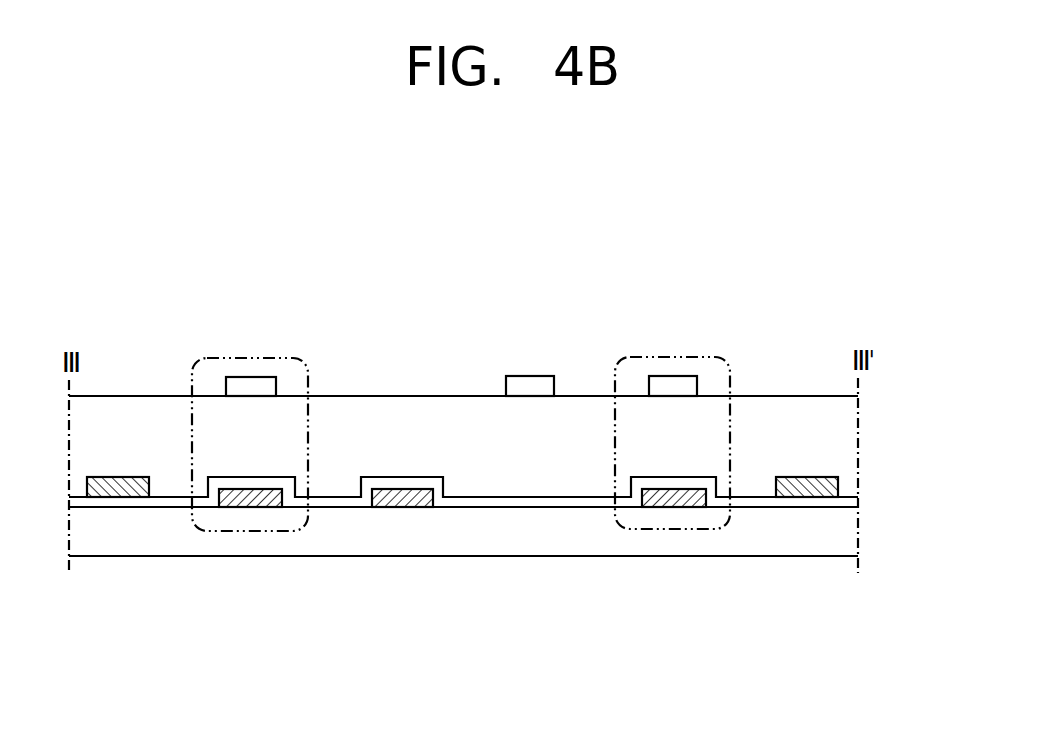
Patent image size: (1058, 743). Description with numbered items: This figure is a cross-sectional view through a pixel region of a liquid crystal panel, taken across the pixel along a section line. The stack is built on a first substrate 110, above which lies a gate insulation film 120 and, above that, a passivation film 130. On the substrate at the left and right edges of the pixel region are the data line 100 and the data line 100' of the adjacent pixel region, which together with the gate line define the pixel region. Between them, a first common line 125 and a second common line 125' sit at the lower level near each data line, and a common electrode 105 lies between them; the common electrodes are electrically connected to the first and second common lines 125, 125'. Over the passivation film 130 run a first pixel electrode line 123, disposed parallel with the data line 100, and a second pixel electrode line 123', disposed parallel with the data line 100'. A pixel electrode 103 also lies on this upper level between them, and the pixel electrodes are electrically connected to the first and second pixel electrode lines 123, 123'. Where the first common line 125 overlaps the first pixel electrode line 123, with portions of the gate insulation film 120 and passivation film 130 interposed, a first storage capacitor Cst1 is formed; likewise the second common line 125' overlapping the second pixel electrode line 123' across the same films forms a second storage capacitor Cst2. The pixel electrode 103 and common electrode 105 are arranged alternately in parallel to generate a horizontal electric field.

The data line 100 is at (117, 562).
The data line 100' is at (824, 560).
The pixel electrode 103 is at (529, 376).
The common electrode 105 is at (407, 507).
The first substrate 110 is at (845, 531).
The gate insulation film 120 is at (845, 496).
The first pixel electrode line 123 is at (251, 345).
The second pixel electrode line 123' is at (673, 345).
The first common line 125 is at (257, 566).
The second common line 125' is at (659, 566).
The passivation film 130 is at (845, 431).
The first storage capacitor Cst1 is at (297, 358).
The second storage capacitor Cst2 is at (627, 357).